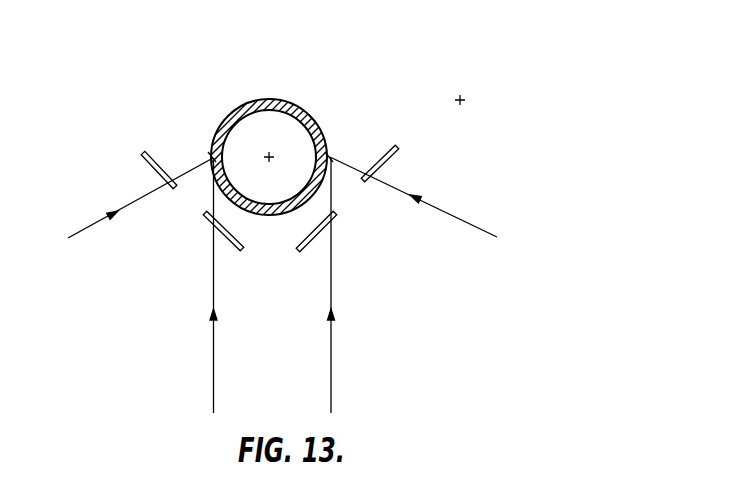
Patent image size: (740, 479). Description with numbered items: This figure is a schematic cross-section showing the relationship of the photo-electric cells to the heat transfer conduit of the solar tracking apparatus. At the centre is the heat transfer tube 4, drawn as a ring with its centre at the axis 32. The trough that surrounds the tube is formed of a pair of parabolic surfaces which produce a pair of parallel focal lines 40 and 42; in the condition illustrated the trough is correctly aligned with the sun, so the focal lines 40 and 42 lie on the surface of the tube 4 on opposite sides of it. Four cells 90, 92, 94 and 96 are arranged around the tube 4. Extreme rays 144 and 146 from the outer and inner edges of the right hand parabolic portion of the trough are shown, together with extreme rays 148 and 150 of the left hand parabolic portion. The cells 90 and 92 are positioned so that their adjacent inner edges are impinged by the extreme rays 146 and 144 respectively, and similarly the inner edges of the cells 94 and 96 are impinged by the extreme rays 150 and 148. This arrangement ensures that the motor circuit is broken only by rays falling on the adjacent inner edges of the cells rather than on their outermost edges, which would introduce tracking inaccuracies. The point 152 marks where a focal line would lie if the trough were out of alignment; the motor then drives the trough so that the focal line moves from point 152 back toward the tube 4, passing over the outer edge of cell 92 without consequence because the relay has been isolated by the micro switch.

The heat transfer tube 4 is at (257, 99).
The axis 32 is at (270, 156).
The focal line 40 is at (212, 157).
The focal line 42 is at (331, 157).
The photo-electric cell 90 is at (313, 241).
The photo-electric cell 92 is at (392, 160).
The photo-electric cell 94 is at (228, 243).
The photo-electric cell 96 is at (143, 155).
The extreme ray 144 is at (437, 207).
The extreme ray 146 is at (335, 388).
The extreme ray 148 is at (97, 224).
The extreme ray 150 is at (214, 368).
The point of misaligned focal line 152 is at (466, 100).